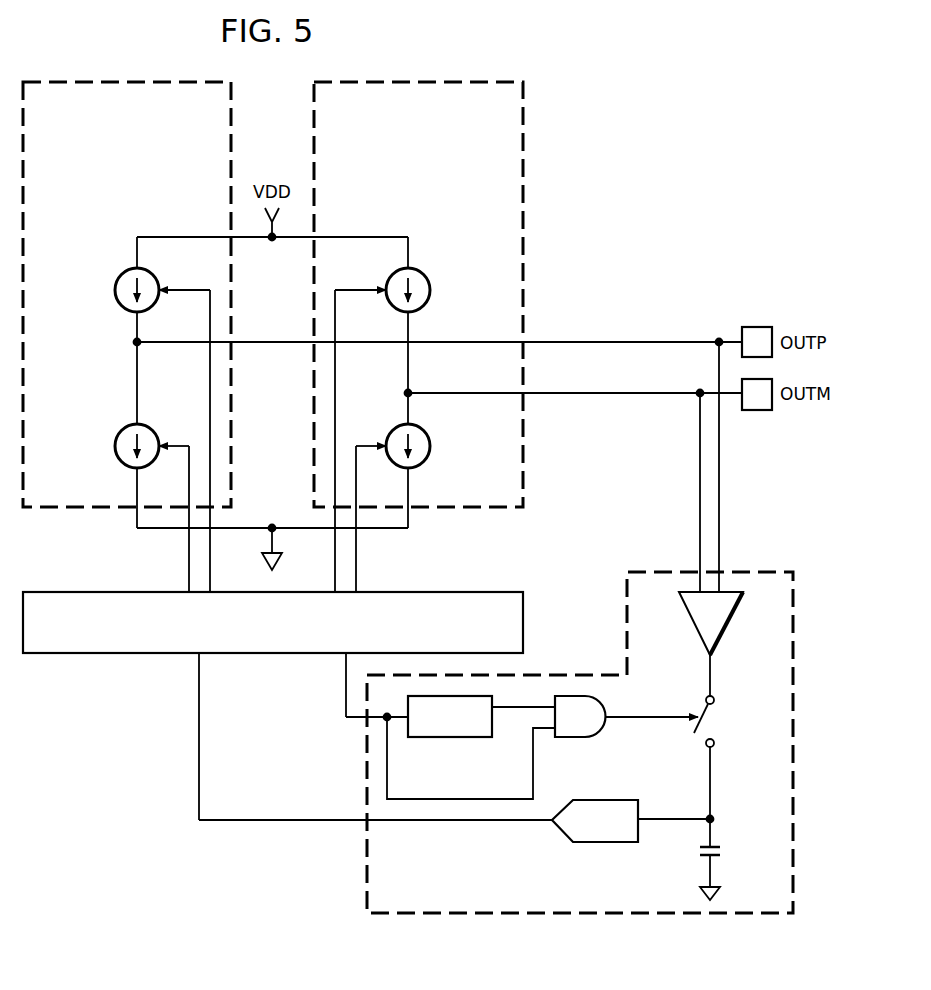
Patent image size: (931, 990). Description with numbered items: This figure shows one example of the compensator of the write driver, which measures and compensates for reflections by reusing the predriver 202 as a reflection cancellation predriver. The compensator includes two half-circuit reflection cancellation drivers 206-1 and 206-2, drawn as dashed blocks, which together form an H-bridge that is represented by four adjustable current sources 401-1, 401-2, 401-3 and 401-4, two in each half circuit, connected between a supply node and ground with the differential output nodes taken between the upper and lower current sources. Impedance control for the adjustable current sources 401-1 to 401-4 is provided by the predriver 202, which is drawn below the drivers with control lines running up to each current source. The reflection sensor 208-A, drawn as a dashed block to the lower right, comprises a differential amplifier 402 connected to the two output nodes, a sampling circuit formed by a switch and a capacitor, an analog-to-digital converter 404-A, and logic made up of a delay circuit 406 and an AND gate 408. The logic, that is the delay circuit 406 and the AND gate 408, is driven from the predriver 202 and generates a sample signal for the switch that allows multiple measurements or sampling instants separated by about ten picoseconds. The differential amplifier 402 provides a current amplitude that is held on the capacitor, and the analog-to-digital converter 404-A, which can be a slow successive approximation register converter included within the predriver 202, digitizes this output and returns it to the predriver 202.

The half-circuit reflection cancellation driver 206-1 is at (100, 80).
The half-circuit reflection cancellation driver 206-2 is at (445, 80).
The adjustable current source 401-1 is at (120, 274).
The adjustable current source 401-2 is at (120, 462).
The adjustable current source 401-3 is at (445, 260).
The adjustable current source 401-4 is at (425, 462).
The predriver 202 is at (275, 655).
The differential amplifier 402 is at (729, 624).
The delay circuit 406 is at (450, 738).
The AND gate 408 is at (575, 738).
The analog-to-digital converter 404-A is at (605, 843).
The reflection sensor 208-A is at (690, 916).